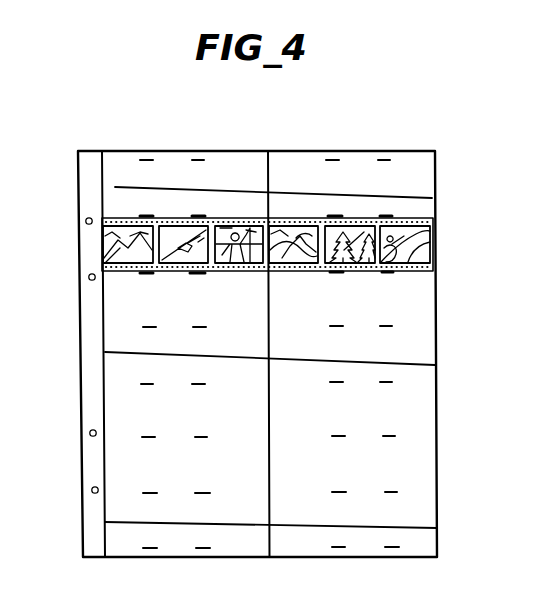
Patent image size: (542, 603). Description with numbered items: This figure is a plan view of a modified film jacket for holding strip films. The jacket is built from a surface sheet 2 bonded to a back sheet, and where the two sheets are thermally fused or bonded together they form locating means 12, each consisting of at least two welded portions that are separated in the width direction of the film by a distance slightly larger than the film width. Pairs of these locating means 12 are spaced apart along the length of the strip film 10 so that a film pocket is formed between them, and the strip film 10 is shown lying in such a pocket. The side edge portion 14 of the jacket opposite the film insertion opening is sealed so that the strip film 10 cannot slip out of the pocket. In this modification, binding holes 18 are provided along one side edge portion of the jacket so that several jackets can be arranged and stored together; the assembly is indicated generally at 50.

The album page assembly 50 is at (364, 126).
The side edge portion 14 is at (437, 362).
The surface sheet 2 is at (132, 362).
The strip film 10 is at (419, 246).
The locating means 12 is at (193, 216).
The binding holes 18 is at (88, 225).